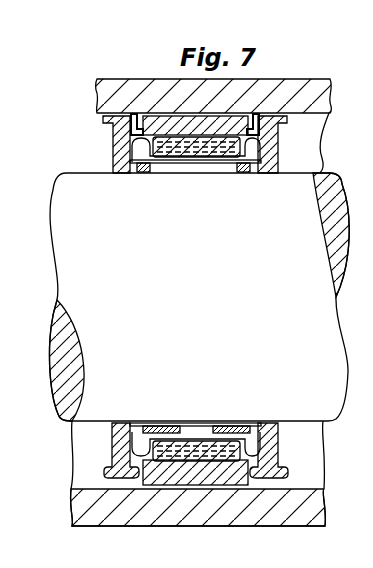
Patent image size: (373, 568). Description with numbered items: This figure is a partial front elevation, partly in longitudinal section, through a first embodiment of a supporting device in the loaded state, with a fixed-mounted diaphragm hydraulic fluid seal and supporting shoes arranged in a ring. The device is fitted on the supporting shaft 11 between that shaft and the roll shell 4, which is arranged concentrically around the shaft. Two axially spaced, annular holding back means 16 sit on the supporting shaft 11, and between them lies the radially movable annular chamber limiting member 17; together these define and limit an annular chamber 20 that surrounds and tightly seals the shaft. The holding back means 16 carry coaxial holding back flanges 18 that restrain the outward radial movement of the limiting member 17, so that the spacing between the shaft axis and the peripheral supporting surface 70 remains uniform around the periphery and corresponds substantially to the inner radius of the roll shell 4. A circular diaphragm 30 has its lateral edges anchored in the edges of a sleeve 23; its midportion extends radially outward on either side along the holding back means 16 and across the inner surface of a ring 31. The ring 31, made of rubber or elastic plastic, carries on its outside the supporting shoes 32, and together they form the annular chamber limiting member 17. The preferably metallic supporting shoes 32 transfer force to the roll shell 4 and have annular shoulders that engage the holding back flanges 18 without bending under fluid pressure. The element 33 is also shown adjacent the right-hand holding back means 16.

The roll shell 4 is at (320, 78).
The supporting shaft 11 is at (298, 183).
The holding back means 16 is at (113, 136).
The annular chamber limiting member 17 is at (185, 128).
The holding back flange 18 is at (132, 128).
The annular chamber 20 is at (243, 150).
The sleeve 23 is at (160, 170).
The circular diaphragm 30 is at (256, 163).
The ring 31 is at (172, 150).
The supporting shoe 32 is at (220, 128).
The clamping element 33 is at (253, 137).
The peripheral supporting surface 70 is at (202, 110).